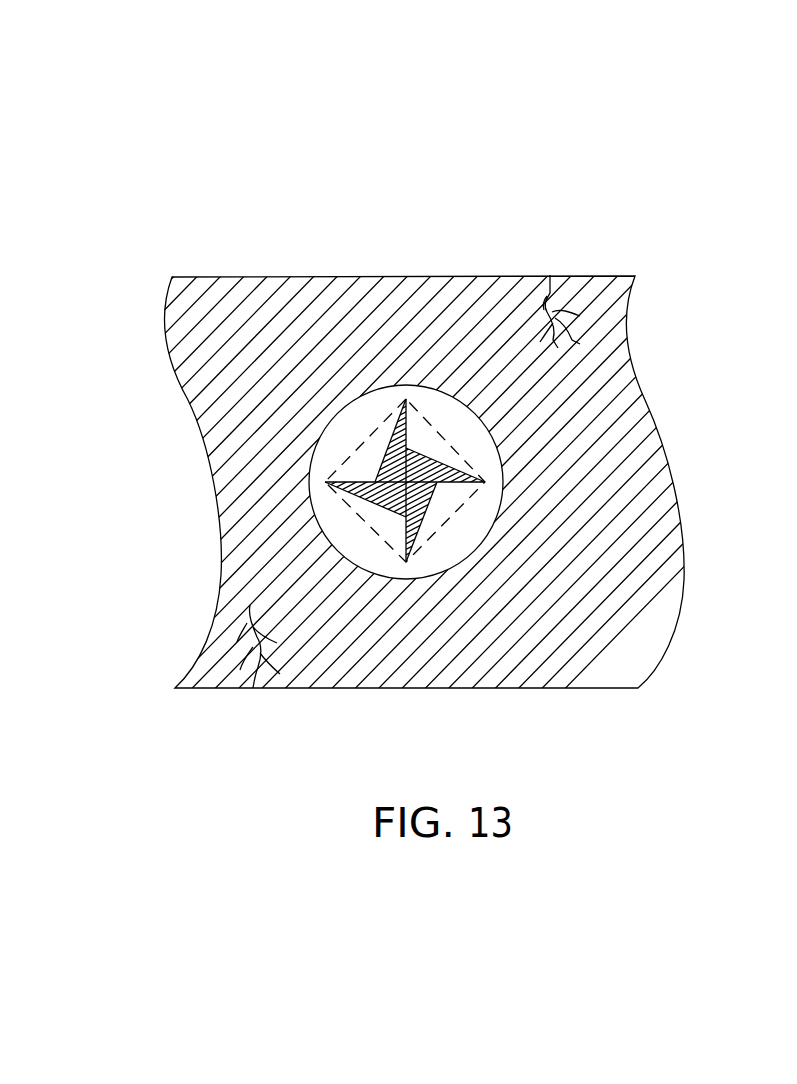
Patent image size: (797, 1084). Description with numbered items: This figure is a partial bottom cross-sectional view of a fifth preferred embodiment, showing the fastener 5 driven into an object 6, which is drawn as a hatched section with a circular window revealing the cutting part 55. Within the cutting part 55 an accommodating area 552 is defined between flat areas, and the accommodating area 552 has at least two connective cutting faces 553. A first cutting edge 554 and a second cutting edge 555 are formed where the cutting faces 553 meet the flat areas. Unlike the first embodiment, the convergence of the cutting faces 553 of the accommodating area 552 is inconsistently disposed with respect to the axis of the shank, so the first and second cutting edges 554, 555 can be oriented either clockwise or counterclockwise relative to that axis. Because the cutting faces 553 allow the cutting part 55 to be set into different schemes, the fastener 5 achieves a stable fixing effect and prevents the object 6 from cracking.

The fastener 5 is at (172, 128).
The object 6 is at (332, 277).
The cutting part 55 is at (325, 443).
The accommodating area 552 is at (379, 517).
The cutting faces 553 is at (457, 482).
The first cutting edge 554 is at (408, 563).
The second cutting edge 555 is at (485, 482).